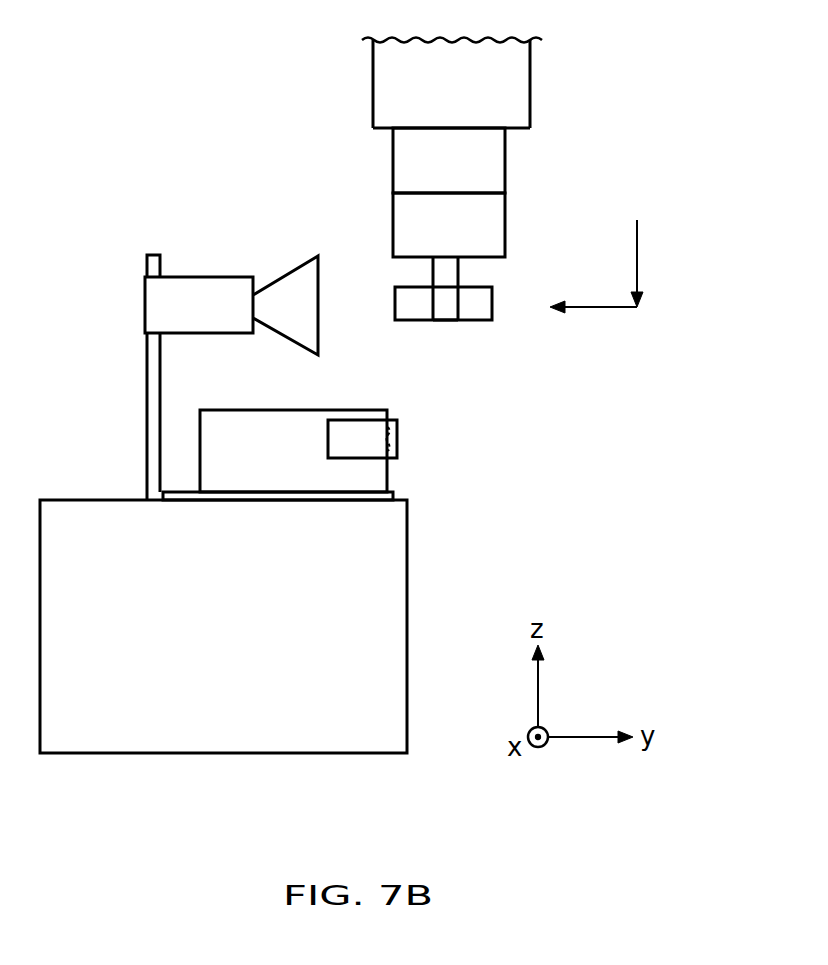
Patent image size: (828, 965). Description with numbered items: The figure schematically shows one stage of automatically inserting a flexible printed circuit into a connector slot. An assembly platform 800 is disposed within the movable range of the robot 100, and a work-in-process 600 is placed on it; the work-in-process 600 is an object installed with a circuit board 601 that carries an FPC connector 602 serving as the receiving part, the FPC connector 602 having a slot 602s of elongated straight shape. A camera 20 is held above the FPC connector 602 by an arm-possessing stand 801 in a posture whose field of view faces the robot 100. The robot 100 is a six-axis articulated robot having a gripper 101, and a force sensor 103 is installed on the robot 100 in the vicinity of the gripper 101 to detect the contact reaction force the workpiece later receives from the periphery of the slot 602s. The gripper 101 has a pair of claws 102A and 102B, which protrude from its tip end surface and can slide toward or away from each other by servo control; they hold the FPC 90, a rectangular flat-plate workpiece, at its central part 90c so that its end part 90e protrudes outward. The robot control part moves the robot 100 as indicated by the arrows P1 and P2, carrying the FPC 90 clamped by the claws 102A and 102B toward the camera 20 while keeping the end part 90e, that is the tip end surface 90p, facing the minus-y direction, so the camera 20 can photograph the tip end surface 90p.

The robot 100 is at (537, 67).
The force sensor 103 is at (499, 157).
The gripper 101 is at (499, 225).
The claw 102A is at (448, 318).
The claw 102B is at (445, 321).
The FPC 90 is at (481, 300).
The end part 90e is at (397, 288).
The tip end surface 90p is at (395, 307).
The central part 90c is at (432, 300).
The arm-possessing stand 801 is at (158, 255).
The camera 20 is at (226, 277).
The work-in-process 600 is at (175, 488).
The circuit board 601 is at (242, 427).
The FPC connector 602 is at (348, 432).
The slot 602s is at (400, 441).
The assembly platform 800 is at (82, 500).
The arrow P1 is at (637, 250).
The arrow P2 is at (602, 307).